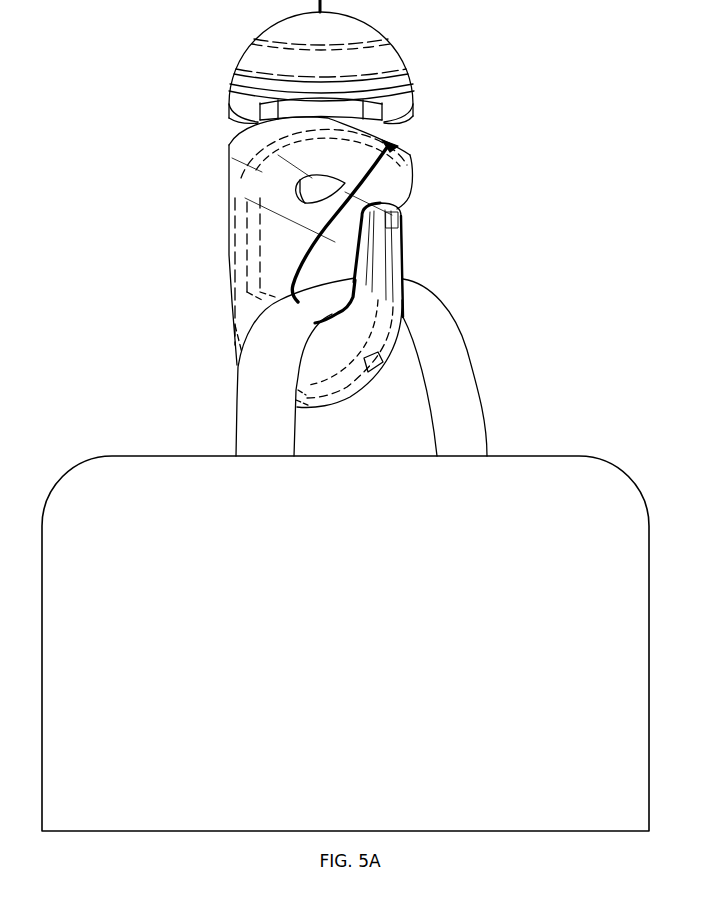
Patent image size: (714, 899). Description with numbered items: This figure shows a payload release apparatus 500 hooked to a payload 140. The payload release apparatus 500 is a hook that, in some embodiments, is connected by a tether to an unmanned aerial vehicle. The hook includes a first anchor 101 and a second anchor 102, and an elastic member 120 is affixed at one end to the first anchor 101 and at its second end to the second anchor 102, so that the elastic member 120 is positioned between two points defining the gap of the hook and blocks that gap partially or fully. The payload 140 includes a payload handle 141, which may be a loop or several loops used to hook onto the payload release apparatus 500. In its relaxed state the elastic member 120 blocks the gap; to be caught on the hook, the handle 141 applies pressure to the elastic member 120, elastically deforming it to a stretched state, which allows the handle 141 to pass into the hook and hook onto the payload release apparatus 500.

The payload release apparatus 500 is at (341, 62).
The first anchor 101 is at (365, 262).
The second anchor 102 is at (405, 208).
The elastic member 120 is at (414, 238).
The payload handle 141 is at (376, 367).
The payload 140 is at (345, 621).